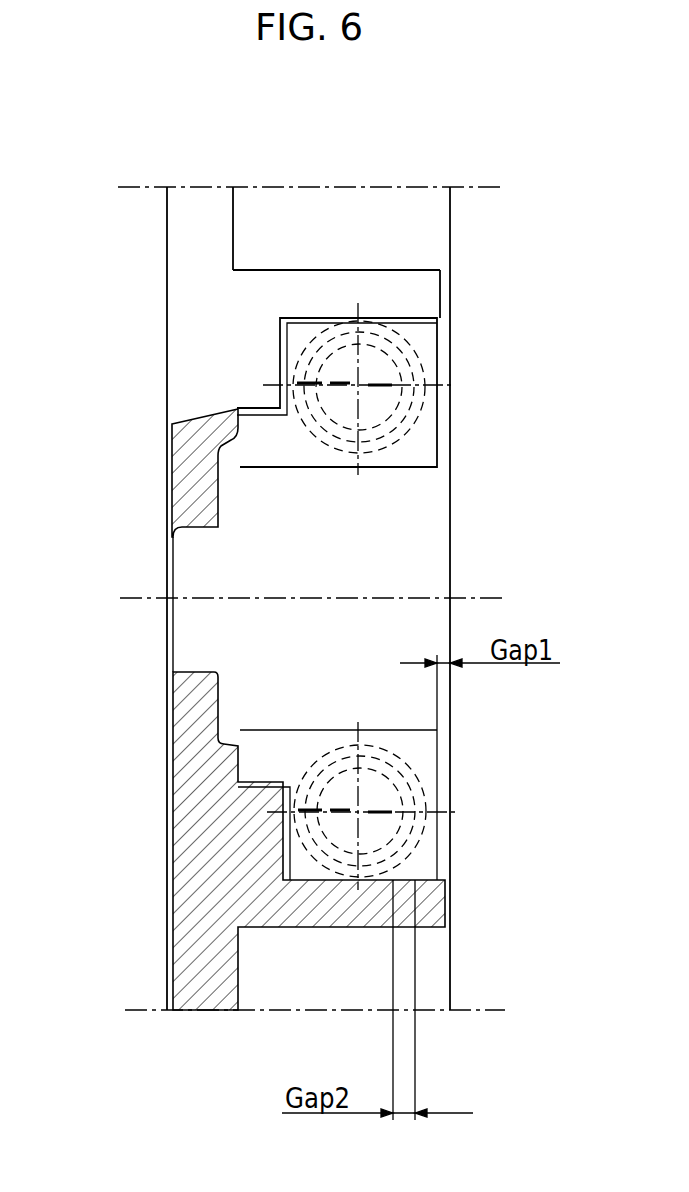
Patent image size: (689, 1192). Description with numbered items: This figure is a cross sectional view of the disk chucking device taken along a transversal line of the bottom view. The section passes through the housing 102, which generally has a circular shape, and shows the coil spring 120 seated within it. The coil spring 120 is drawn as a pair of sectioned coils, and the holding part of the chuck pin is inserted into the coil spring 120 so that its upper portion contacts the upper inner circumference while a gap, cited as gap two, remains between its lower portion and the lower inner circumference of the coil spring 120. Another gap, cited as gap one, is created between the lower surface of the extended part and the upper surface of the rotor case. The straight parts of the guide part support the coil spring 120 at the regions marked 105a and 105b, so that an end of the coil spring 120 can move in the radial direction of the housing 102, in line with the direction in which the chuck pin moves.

The housing 102 is at (193, 268).
The straight part region of the guide part 105a is at (363, 878).
The straight part region of the guide part 105b is at (368, 262).
The coil spring 120 is at (315, 305).